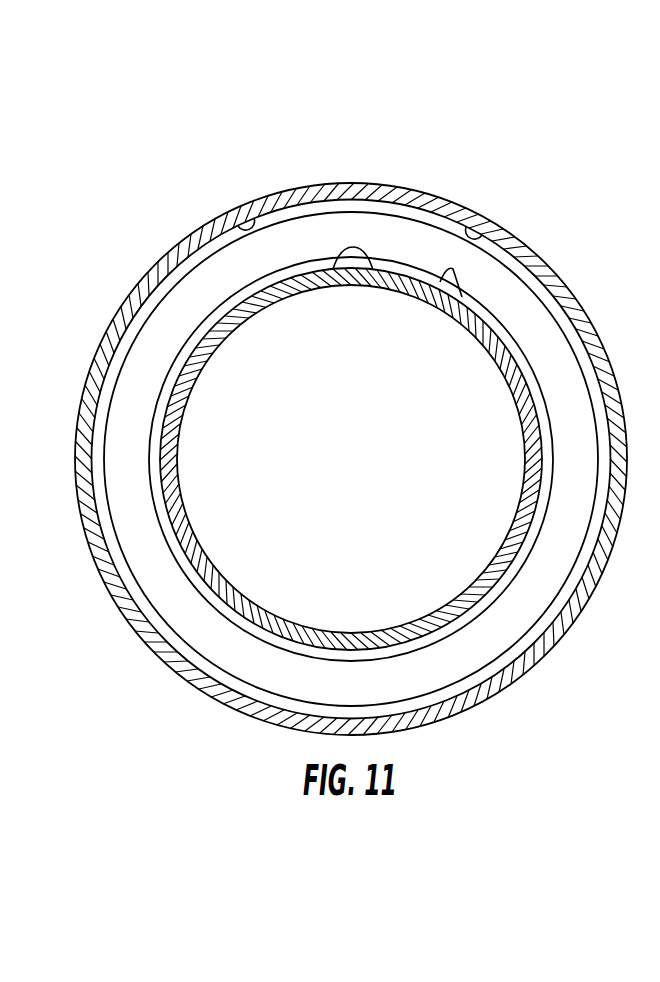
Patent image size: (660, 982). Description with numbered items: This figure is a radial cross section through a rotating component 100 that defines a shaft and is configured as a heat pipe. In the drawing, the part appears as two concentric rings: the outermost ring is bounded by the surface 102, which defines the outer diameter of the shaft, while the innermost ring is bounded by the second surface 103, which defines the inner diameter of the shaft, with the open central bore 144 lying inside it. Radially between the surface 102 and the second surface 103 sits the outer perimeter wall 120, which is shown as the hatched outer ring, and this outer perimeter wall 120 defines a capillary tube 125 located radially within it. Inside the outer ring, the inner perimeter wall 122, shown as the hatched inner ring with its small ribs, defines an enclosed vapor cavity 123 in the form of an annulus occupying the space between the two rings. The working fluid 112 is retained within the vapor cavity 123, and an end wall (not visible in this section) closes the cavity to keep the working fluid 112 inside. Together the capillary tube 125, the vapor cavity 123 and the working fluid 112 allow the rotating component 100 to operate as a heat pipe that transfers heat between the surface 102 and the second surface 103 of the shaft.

The rotating component 100 is at (545, 163).
The surface 102 is at (343, 183).
The second surface 103 is at (264, 306).
The working fluid 112 is at (267, 270).
The outer perimeter wall 120 is at (240, 221).
The inner perimeter wall 122 is at (533, 297).
The vapor cavity 123 is at (420, 249).
The capillary tube 125 is at (472, 307).
The lumen 144 is at (362, 465).